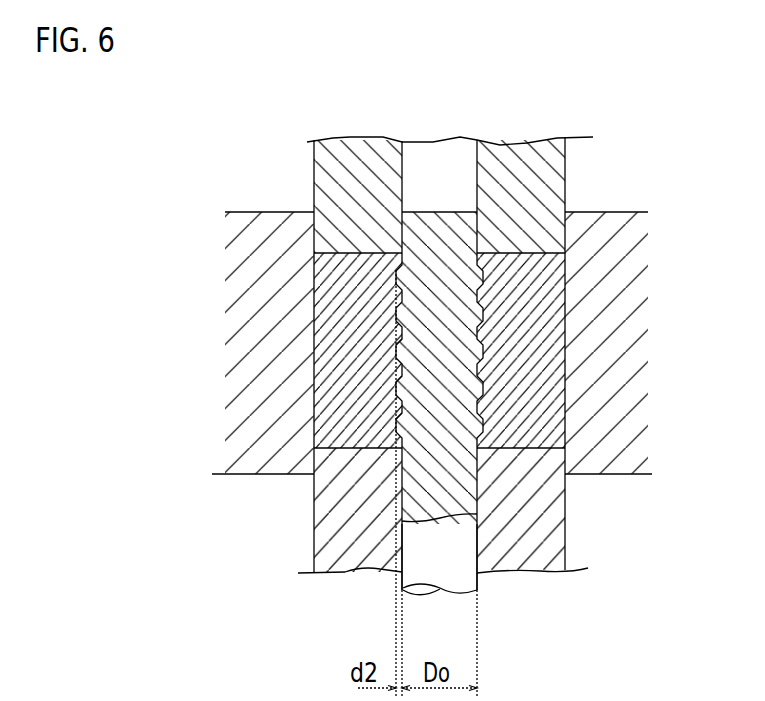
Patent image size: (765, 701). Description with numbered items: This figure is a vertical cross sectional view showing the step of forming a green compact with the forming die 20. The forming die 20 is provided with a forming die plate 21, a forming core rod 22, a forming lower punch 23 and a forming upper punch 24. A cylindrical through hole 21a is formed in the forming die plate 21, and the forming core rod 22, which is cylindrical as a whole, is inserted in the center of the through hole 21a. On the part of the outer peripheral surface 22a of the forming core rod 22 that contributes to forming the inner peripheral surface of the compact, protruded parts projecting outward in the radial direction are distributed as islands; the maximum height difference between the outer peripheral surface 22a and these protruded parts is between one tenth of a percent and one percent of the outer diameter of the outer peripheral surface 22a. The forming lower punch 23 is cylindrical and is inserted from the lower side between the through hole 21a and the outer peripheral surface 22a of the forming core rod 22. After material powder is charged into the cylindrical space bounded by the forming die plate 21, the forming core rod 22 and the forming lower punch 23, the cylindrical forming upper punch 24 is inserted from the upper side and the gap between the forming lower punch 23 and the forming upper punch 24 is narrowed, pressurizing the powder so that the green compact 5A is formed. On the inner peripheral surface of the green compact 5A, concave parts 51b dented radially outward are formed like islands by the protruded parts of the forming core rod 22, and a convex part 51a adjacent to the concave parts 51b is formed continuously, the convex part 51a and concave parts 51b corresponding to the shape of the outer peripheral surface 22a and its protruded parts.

The forming die 20 is at (583, 122).
The forming die plate 21 is at (262, 227).
The through hole 21a is at (546, 262).
The forming core rod 22 is at (447, 205).
The outer peripheral surface 22a is at (458, 547).
The forming lower punch 23 is at (342, 557).
The forming upper punch 24 is at (357, 153).
The green compact 5A is at (343, 456).
The convex part 51a is at (400, 297).
The concave parts 51b is at (400, 352).